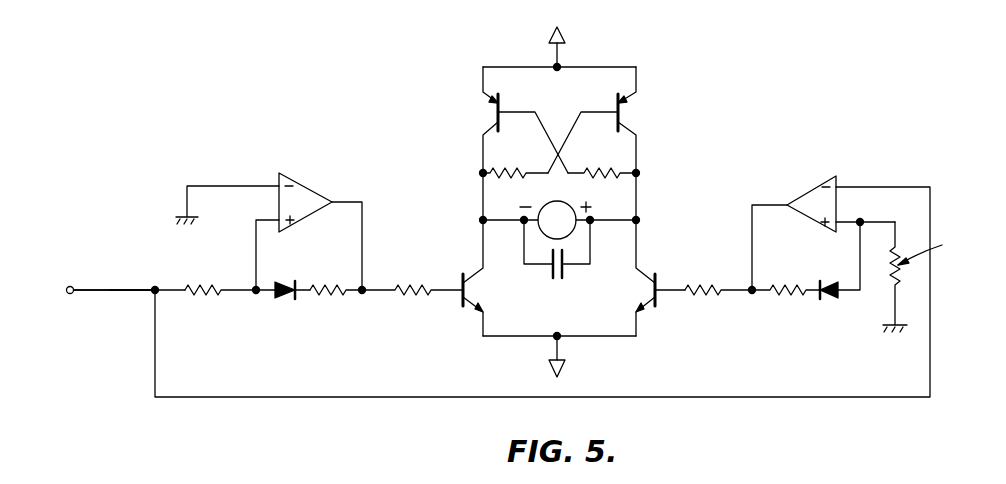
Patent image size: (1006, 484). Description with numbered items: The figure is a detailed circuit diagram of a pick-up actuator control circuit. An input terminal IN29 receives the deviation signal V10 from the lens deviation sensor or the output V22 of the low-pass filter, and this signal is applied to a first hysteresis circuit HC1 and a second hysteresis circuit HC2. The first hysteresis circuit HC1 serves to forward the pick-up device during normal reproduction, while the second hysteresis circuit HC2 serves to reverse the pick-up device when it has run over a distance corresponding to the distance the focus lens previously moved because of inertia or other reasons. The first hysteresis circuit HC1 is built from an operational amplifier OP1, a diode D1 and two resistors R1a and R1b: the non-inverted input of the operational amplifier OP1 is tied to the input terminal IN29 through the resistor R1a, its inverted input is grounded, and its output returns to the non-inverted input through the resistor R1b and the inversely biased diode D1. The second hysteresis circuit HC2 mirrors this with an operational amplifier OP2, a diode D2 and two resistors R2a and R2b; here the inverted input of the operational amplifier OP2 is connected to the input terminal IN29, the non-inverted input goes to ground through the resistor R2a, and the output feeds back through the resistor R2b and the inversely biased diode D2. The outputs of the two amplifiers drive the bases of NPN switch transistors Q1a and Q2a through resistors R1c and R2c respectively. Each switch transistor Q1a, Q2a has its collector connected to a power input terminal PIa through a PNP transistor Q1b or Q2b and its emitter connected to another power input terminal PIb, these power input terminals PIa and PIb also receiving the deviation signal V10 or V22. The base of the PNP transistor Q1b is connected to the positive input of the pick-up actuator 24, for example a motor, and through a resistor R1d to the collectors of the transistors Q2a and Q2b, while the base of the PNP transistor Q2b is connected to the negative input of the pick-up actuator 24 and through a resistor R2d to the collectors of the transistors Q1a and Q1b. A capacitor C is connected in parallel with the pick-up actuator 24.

The input terminal IN29 is at (84, 291).
The deviation signal V10 is at (93, 288).
The output of LPF V22 is at (140, 264).
The first hysteresis circuit HC1 is at (269, 193).
The operational amplifier OP1 is at (312, 190).
The diode D1 is at (283, 278).
The resistor R1a is at (220, 303).
The resistor R1b is at (336, 303).
The resistor R1c is at (412, 303).
The resistor R1d is at (604, 163).
The switch transistor Q1a is at (459, 278).
The PNP transistor Q1b is at (525, 120).
The switch transistor Q2a is at (662, 278).
The PNP transistor Q2b is at (612, 120).
The resistor R2a is at (932, 277).
The resistor R2b is at (786, 304).
The resistor R2c is at (717, 304).
The resistor R2d is at (514, 163).
The power input terminal PIa is at (559, 49).
The power input terminal PIb is at (559, 357).
The pick-up actuator 24 is at (573, 232).
The capacitor C is at (557, 261).
The diode D2 is at (836, 260).
The operational amplifier OP2 is at (806, 190).
The second hysteresis circuit HC2 is at (866, 215).